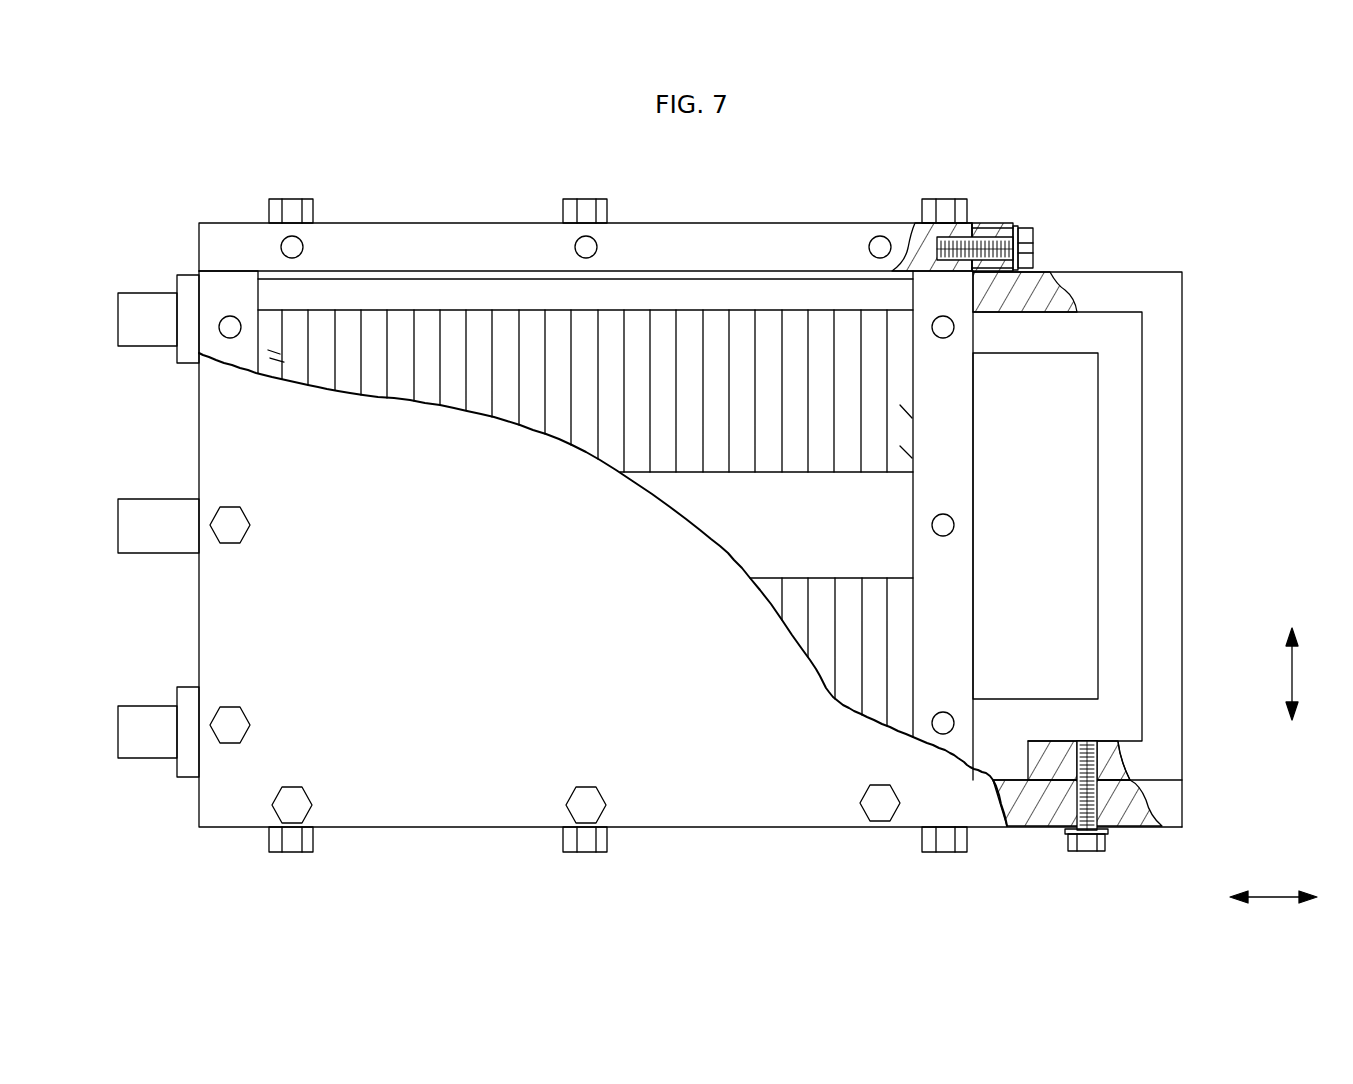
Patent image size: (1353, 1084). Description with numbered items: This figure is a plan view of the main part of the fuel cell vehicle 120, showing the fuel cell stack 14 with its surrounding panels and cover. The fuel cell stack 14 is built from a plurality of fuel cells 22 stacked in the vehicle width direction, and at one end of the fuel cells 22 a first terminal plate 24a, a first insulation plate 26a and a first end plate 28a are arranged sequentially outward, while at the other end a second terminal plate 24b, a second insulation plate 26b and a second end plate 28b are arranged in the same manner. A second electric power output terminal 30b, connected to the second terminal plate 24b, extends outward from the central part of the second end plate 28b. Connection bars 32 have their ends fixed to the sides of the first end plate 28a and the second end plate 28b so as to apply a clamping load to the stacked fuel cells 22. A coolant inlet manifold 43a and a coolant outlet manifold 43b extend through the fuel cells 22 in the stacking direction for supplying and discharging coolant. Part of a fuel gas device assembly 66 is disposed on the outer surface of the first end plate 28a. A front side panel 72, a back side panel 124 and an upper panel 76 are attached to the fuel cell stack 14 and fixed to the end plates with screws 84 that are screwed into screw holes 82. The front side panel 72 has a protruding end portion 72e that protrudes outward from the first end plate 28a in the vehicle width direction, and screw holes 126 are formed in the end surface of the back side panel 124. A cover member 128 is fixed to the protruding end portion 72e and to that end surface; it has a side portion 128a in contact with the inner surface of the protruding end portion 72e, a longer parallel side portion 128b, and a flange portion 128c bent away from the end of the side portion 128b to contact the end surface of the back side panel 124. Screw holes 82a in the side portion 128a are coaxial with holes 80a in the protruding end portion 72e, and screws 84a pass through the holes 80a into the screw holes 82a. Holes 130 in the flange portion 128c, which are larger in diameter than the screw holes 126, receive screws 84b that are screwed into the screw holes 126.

The fuel cell vehicle 120 is at (812, 150).
The fuel cell stack 14 is at (450, 298).
The back side panel 124 is at (516, 224).
The screw holes 82 is at (281, 247).
The fuel cells 22 is at (720, 320).
The connection bars 32 is at (753, 297).
The second end plate 28b is at (215, 272).
The first end plate 28a is at (975, 598).
The coolant outlet manifold 43b is at (132, 322).
The second electric power output terminal 30b is at (128, 540).
The coolant inlet manifold 43a is at (130, 735).
The screws 84 is at (245, 532).
The second terminal plate 24b is at (275, 352).
The second insulation plate 26b is at (277, 360).
The first insulation plate 26a is at (903, 412).
The first terminal plate 24a is at (903, 452).
The screw holes 126 is at (922, 238).
The flange portion 128c is at (988, 240).
The holes 130 is at (1005, 258).
The screws 84b is at (1032, 248).
The side portion 128b is at (1115, 295).
The cover member 128 is at (1183, 363).
The fuel gas device assembly 66 is at (1100, 518).
The side portion 128a is at (1057, 752).
The screw holes 82a is at (1085, 760).
The holes 80a is at (1075, 832).
The screws 84a is at (1087, 853).
The protruding end portion 72e is at (1132, 832).
The front side panel 72 is at (1185, 805).
The upper panel 76 is at (397, 811).